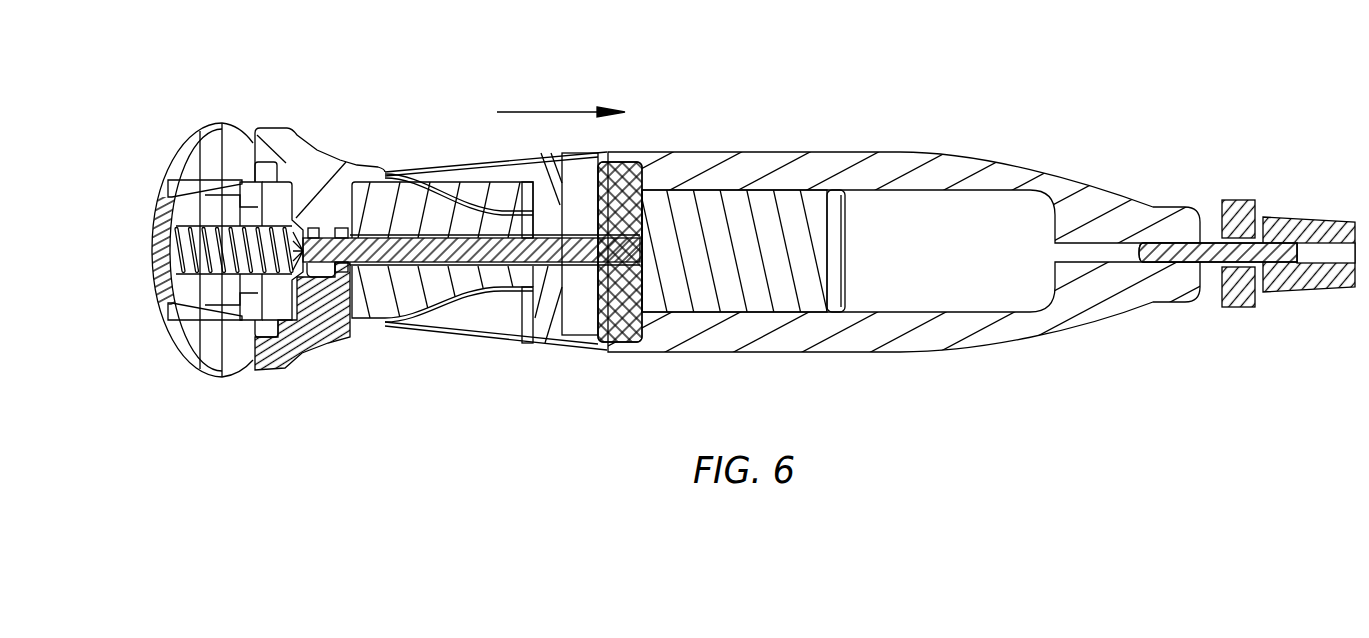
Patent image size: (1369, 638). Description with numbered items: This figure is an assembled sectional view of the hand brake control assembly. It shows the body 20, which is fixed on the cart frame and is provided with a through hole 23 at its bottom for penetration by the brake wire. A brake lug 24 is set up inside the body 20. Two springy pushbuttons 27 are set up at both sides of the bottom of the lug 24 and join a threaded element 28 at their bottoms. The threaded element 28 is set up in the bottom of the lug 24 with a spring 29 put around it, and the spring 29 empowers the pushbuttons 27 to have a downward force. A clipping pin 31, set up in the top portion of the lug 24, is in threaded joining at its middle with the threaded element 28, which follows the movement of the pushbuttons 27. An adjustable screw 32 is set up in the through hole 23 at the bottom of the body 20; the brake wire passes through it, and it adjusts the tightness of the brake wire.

The body 20 is at (962, 327).
The through hole 23 is at (1092, 252).
The brake lug 24 is at (433, 295).
The springy pushbuttons 27 is at (285, 150).
The threaded element 28 is at (413, 238).
The spring 29 is at (207, 238).
The clipping pin 31 is at (615, 317).
The adjustable screw 32 is at (1297, 233).